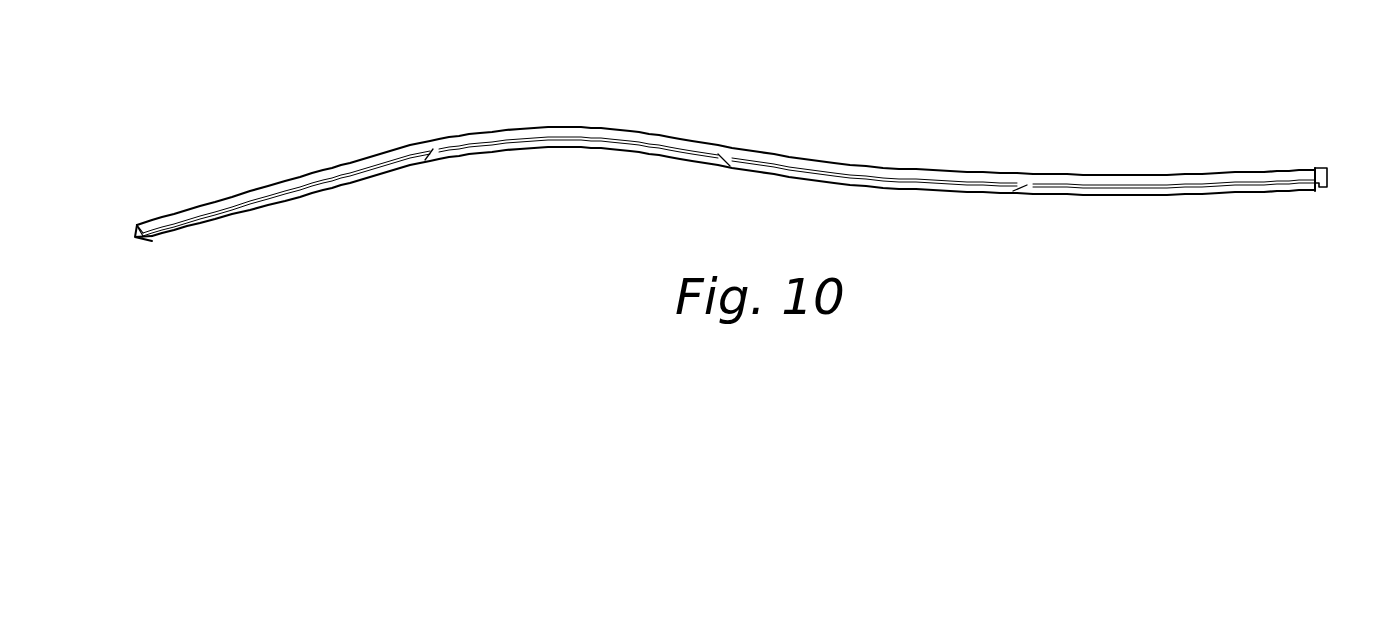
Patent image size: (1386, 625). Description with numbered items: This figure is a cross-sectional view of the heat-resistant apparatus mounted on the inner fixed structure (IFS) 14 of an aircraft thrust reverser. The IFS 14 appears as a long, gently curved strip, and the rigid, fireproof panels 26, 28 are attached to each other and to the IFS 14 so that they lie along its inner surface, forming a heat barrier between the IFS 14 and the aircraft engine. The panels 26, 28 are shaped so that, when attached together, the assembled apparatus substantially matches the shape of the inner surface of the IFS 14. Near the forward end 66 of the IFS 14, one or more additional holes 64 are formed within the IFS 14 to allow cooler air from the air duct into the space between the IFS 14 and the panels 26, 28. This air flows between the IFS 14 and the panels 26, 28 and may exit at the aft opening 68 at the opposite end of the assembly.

The inner fixed structure 14 is at (622, 128).
The rigid fireproof panel 26 is at (317, 191).
The rigid fireproof panel 28 is at (543, 151).
The additional hole 64 is at (1316, 171).
The forward end 66 is at (1327, 168).
The aft opening 68 is at (134, 238).